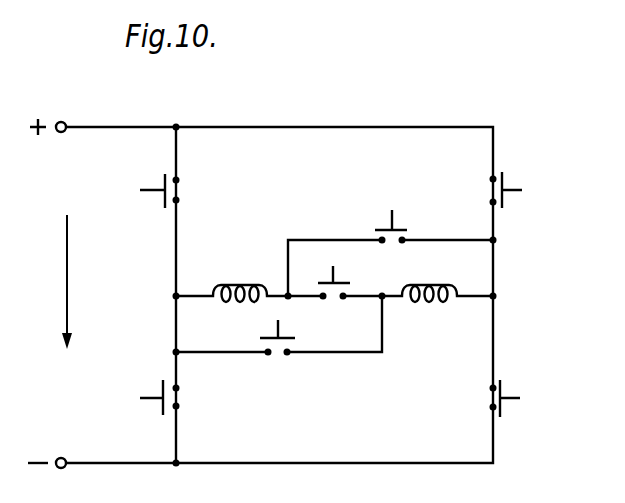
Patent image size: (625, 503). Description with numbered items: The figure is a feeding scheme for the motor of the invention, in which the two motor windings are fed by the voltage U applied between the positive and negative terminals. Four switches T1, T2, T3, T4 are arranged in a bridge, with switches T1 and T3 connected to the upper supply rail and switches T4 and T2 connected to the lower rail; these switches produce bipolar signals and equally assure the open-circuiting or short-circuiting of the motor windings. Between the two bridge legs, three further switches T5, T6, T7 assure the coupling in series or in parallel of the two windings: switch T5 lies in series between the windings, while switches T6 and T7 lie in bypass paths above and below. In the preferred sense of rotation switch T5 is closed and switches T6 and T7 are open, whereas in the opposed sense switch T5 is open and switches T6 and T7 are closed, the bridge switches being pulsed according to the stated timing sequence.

The switch T1 is at (158, 190).
The switch T2 is at (510, 398).
The switch T3 is at (512, 190).
The switch T4 is at (157, 398).
The switch T5 is at (339, 283).
The switch T6 is at (398, 230).
The switch T7 is at (284, 338).
The voltage U is at (76, 282).